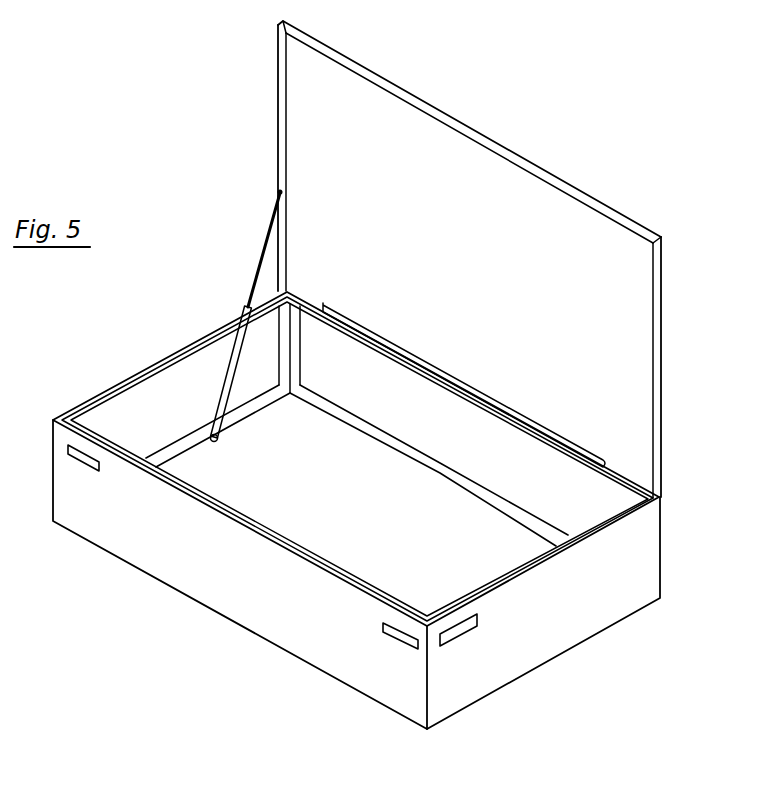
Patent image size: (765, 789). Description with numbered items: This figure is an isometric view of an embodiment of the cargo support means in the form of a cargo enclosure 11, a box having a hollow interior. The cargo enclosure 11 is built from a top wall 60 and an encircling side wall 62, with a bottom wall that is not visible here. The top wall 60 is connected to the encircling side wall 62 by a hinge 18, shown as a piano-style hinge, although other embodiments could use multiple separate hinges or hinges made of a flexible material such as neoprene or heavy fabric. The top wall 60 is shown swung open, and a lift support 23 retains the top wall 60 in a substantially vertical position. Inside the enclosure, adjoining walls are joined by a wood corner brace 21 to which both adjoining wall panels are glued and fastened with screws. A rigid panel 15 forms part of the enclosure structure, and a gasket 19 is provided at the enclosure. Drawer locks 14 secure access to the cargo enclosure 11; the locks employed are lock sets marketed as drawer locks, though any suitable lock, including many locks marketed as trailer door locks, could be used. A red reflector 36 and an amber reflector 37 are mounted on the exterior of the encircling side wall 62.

The cargo enclosure 11 is at (176, 250).
The drawer lock 14 is at (148, 492).
The rigid panel 15 is at (630, 303).
The hinge 18 is at (598, 461).
The gasket 19 is at (107, 387).
The wood corner brace 21 is at (200, 405).
The lift support 23 is at (246, 305).
The red reflector 36 is at (68, 451).
The amber reflector 37 is at (466, 636).
The top wall 60 is at (433, 107).
The encircling side wall 62 is at (585, 495).